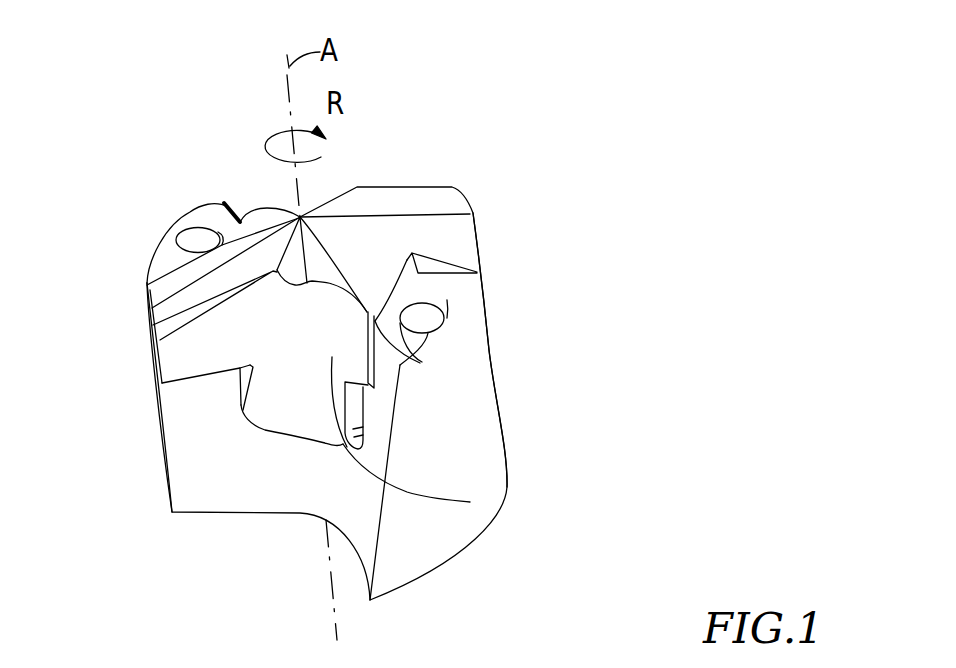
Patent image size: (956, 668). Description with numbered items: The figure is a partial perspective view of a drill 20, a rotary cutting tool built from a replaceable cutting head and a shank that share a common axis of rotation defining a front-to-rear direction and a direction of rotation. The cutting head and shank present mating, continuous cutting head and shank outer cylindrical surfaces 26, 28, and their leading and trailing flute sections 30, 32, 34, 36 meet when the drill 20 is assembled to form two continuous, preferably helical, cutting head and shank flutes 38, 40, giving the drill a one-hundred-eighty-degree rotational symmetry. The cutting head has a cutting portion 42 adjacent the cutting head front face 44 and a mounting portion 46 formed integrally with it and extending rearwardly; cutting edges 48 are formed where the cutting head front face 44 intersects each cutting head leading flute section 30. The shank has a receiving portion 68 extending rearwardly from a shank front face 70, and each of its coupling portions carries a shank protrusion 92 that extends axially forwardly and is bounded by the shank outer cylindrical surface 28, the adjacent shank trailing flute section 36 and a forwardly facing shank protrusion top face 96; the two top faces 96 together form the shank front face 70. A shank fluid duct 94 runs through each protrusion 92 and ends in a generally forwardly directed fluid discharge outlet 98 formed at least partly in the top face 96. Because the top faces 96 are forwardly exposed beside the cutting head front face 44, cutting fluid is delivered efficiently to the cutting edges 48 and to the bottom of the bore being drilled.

The drill 20 is at (580, 204).
The cutting head outer cylindrical surface 26 is at (163, 318).
The shank outer cylindrical surface 28 is at (480, 457).
The cutting head leading flute section 30 is at (162, 377).
The cutting head trailing flute section 32 is at (382, 422).
The shank leading flute section 34 is at (178, 407).
The shank trailing flute section 36 is at (470, 502).
The cutting head and shank flute 38 is at (276, 368).
The cutting head and shank flute 40 is at (310, 500).
The cutting portion 42 is at (379, 195).
The cutting head front face 44 is at (443, 225).
The mounting portion 46 is at (299, 396).
The cutting edge 48 is at (425, 187).
The receiving portion 68 is at (222, 413).
The shank front face 70 is at (162, 251).
The shank protrusion 92 is at (458, 290).
The shank fluid duct 94 is at (420, 363).
The shank protrusion top face 96 is at (217, 189).
The fluid discharge outlet 98 is at (197, 228).